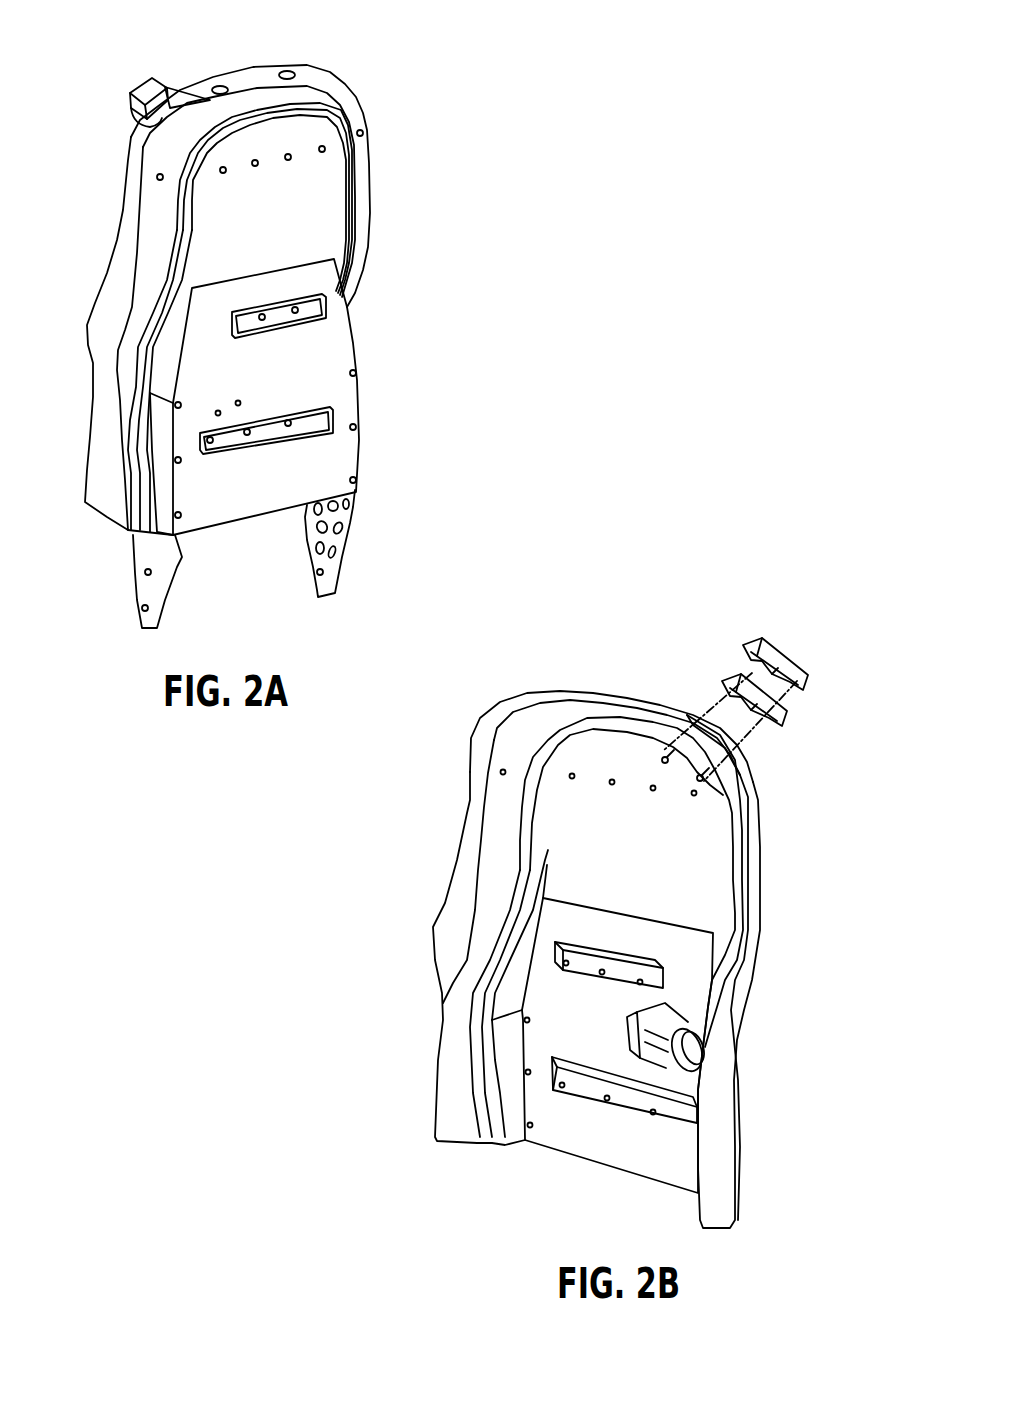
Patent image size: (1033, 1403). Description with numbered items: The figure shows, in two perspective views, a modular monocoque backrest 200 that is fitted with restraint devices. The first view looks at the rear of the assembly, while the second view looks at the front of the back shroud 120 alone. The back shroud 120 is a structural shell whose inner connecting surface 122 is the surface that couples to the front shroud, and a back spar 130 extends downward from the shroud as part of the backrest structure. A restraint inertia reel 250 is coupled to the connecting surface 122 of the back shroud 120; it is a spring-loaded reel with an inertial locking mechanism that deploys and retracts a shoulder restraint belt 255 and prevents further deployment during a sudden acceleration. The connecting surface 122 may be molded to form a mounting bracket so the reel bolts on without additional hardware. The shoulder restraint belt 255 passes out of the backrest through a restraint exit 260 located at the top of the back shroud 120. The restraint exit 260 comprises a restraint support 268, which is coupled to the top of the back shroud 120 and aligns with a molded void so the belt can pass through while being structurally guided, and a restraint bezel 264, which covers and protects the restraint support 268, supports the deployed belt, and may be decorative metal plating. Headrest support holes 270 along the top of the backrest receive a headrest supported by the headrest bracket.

In FIG. 2A, the modular monocoque backrest 200 is at (438, 114).
In FIG. 2A, the back shroud 120 is at (325, 344).
In FIG. 2B, the back shroud 120 is at (404, 860).
In FIG. 2B, the connecting surface 122 is at (703, 913).
In FIG. 2A, the back spar 130 is at (145, 598).
In FIG. 2B, the restraint inertia reel 250 is at (677, 1033).
In FIG. 2A, the shoulder restraint belt 255 is at (130, 93).
In FIG. 2A, the restraint exit 260 is at (174, 92).
In FIG. 2B, the restraint exit 260 is at (740, 678).
In FIG. 2B, the restraint bezel 264 is at (787, 646).
In FIG. 2B, the restraint support 268 is at (721, 682).
In FIG. 2A, the headrest support holes 270 is at (221, 86).